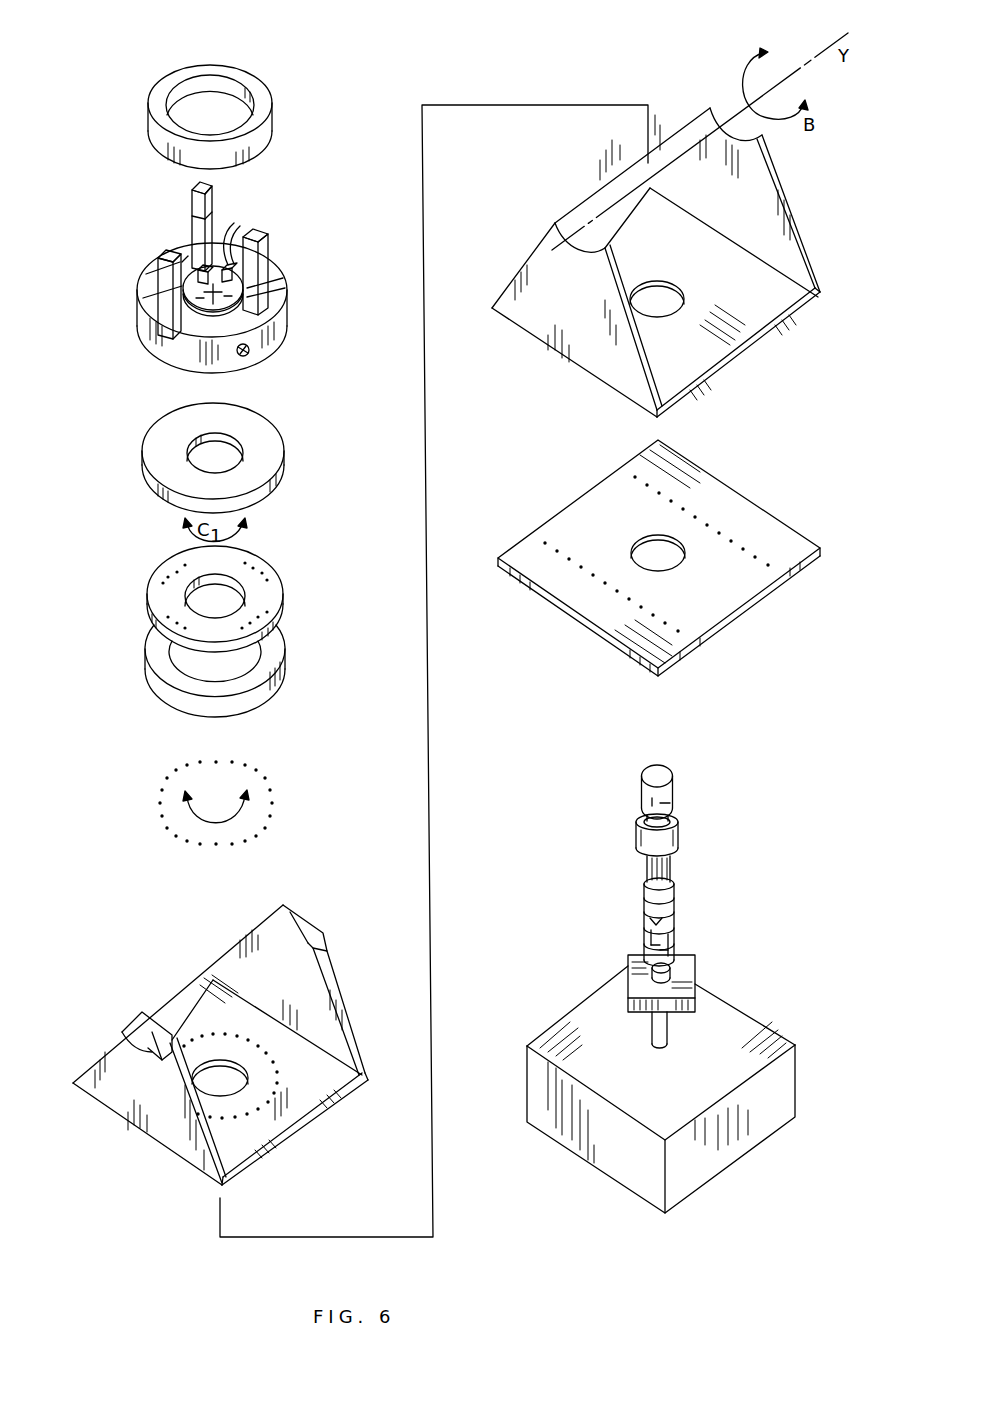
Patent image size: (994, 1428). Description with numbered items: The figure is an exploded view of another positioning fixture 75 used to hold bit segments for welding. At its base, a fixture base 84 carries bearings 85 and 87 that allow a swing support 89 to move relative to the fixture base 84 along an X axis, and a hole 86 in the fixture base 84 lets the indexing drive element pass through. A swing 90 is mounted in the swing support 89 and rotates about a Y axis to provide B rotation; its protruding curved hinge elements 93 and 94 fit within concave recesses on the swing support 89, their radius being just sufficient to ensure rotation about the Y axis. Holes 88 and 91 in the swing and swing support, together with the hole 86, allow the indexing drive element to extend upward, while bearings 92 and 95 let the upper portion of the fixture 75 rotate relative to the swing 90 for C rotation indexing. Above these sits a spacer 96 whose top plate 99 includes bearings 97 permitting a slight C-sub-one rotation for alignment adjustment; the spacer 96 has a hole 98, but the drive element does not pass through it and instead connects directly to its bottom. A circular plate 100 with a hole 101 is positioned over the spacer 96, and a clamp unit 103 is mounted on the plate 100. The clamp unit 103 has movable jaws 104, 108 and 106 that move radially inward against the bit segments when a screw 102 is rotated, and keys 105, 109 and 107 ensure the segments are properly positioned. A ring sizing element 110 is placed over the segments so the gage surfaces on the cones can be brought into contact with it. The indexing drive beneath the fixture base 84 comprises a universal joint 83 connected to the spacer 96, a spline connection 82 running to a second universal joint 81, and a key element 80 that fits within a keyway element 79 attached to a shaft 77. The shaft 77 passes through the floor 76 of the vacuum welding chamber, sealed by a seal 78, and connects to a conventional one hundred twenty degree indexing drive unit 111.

The positioning fixture 75 is at (108, 1240).
The floor 76 is at (688, 1008).
The shaft 77 is at (688, 983).
The seal 78 is at (675, 972).
The keyway element 79 is at (676, 950).
The key element 80 is at (675, 932).
The universal joint 81 is at (677, 918).
The spline connection 82 is at (679, 839).
The universal joint 83 is at (673, 786).
The fixture base 84 is at (594, 610).
The bearing 85 is at (728, 537).
The hole 86 is at (672, 555).
The bearing 87 is at (637, 612).
The hole 88 is at (668, 298).
The swing support 89 is at (720, 367).
The swing 90 is at (273, 1123).
The hole 91 is at (238, 1083).
The bearing 92 is at (280, 1058).
The curved hinge element 93 is at (133, 1041).
The curved hinge element 94 is at (328, 940).
The bearing 95 is at (272, 798).
The spacer 96 is at (272, 655).
The bearing 97 is at (266, 609).
The hole 98 is at (203, 602).
The top plate 99 is at (268, 590).
The circular plate 100 is at (268, 453).
The hole 101 is at (204, 457).
The screw 102 is at (249, 354).
The clamp unit 103 is at (268, 316).
The movable jaw 104 is at (268, 237).
The key 105 is at (215, 298).
The movable jaw 106 is at (150, 301).
The key 107 is at (188, 258).
The movable jaw 108 is at (210, 203).
The key 109 is at (237, 222).
The ring sizing element 110 is at (264, 113).
The indexing drive unit 111 is at (541, 1078).